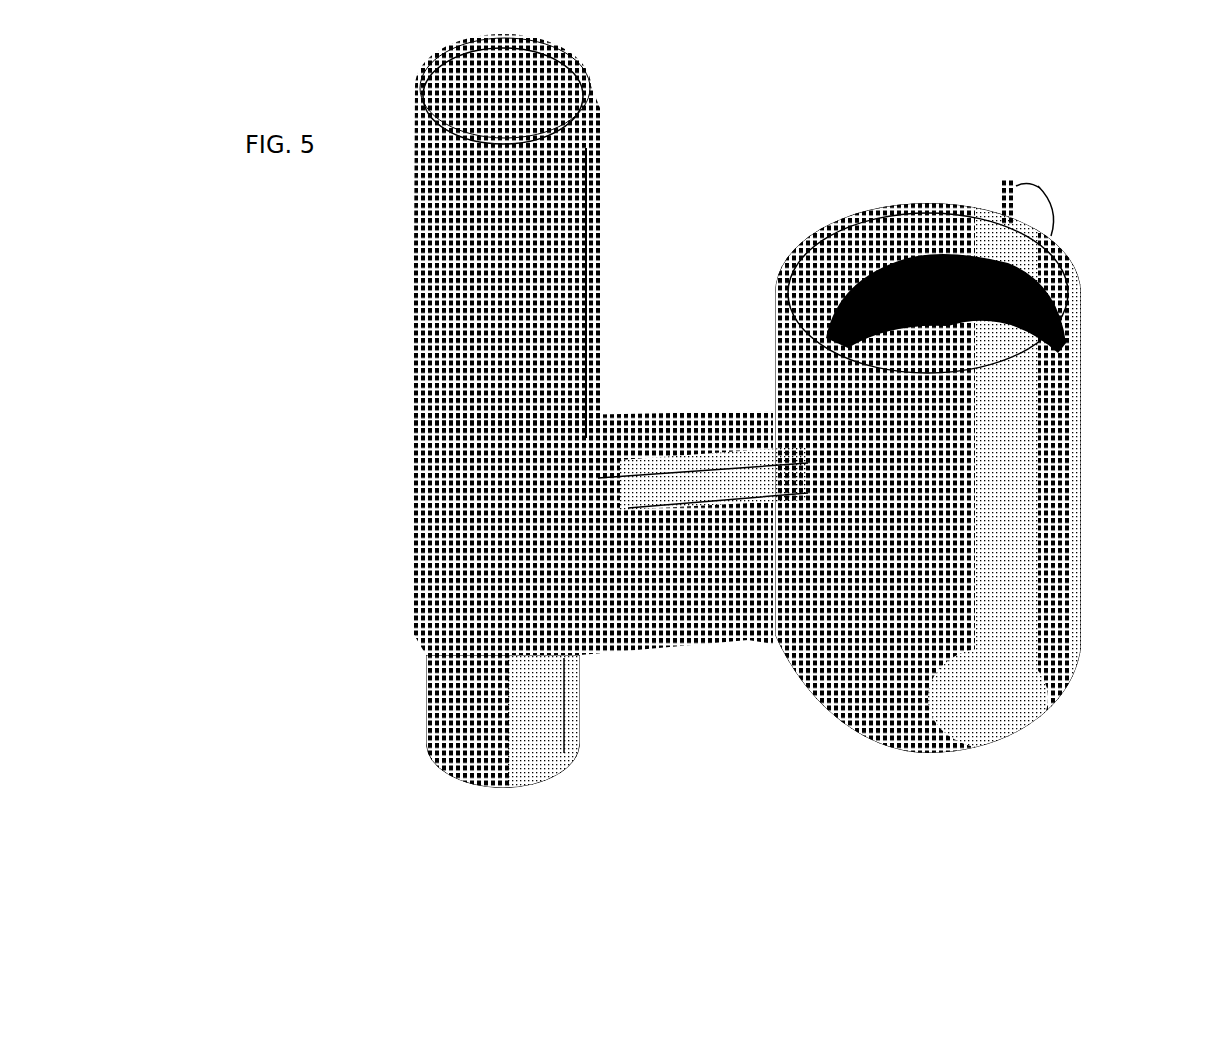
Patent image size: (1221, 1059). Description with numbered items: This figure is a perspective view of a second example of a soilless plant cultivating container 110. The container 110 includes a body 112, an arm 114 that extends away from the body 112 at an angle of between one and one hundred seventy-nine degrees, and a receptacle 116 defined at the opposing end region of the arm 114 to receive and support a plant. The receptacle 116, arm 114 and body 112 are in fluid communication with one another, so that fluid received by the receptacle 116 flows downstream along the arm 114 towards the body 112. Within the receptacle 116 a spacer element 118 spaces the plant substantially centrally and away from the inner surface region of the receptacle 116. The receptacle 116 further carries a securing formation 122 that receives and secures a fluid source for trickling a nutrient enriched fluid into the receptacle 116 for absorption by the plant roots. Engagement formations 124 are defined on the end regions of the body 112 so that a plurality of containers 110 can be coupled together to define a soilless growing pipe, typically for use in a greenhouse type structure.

The soilless plant cultivating container 110 is at (700, 472).
The body 112 is at (402, 456).
The arm 114 is at (667, 640).
The receptacle 116 is at (1063, 469).
The spacer element 118 is at (1060, 270).
The securing formation 122 is at (1000, 173).
The engagement formations 124 is at (570, 67).